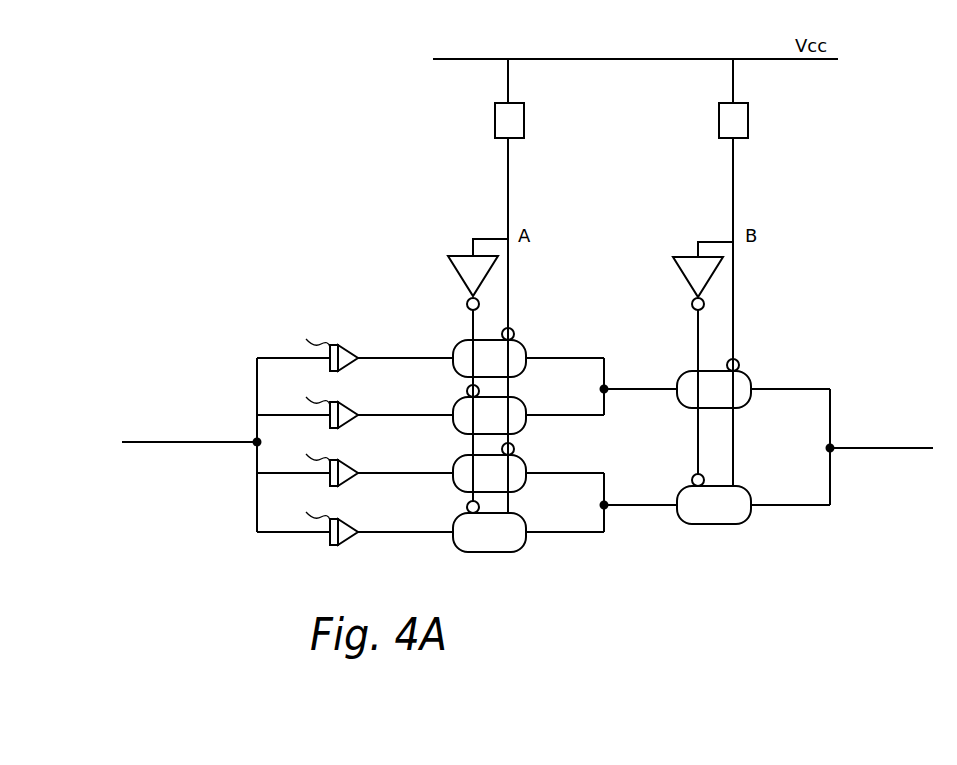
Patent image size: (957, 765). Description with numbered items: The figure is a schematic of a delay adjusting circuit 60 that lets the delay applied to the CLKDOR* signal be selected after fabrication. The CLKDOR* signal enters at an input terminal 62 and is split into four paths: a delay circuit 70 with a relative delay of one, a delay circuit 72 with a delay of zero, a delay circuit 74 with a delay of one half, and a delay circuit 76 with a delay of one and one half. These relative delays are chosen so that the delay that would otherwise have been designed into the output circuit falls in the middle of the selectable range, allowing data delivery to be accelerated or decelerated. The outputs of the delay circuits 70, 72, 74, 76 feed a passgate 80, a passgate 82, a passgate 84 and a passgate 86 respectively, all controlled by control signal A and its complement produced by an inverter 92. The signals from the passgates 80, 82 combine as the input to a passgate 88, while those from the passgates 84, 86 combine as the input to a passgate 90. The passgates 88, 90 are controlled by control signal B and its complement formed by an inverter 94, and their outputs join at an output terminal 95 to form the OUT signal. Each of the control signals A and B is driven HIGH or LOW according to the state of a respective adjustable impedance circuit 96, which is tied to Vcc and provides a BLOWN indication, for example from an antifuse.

The delay adjusting circuit 60 is at (628, 585).
The input terminal 62 is at (255, 446).
The delay circuit 70 is at (350, 369).
The delay circuit 72 is at (350, 426).
The delay circuit 74 is at (350, 484).
The delay circuit 76 is at (350, 543).
The passgate 80 is at (524, 345).
The passgate 82 is at (524, 402).
The passgate 84 is at (524, 460).
The passgate 86 is at (524, 518).
The passgate 88 is at (749, 376).
The passgate 90 is at (749, 491).
The inverter 92 is at (463, 283).
The inverter 94 is at (688, 283).
The output terminal 95 is at (832, 446).
The adjustable impedance circuit 96 is at (524, 118).